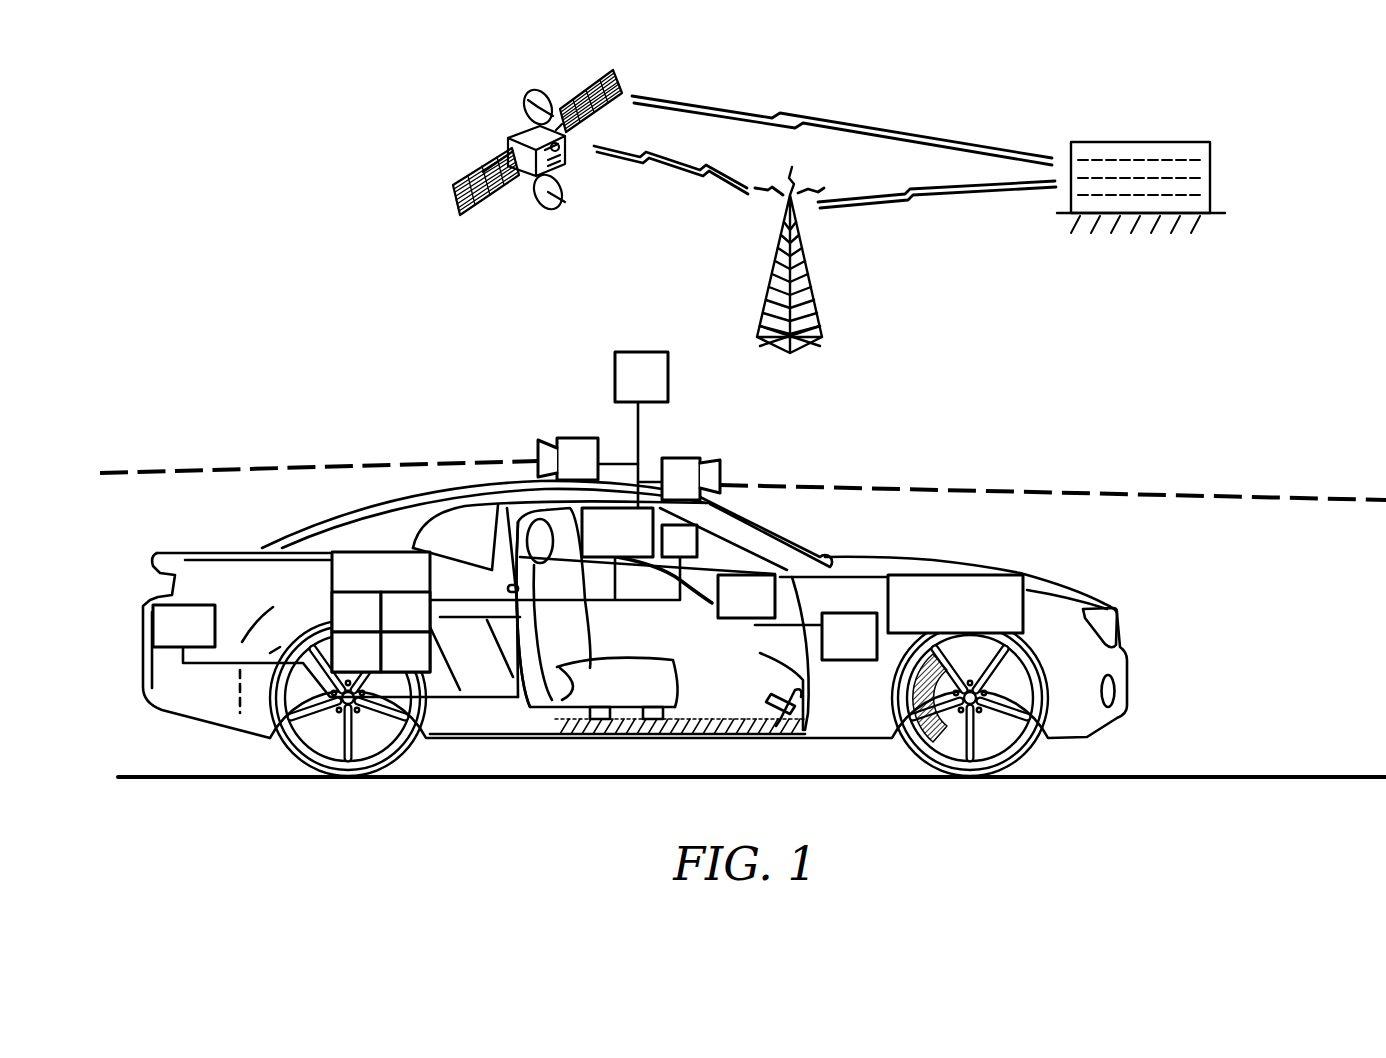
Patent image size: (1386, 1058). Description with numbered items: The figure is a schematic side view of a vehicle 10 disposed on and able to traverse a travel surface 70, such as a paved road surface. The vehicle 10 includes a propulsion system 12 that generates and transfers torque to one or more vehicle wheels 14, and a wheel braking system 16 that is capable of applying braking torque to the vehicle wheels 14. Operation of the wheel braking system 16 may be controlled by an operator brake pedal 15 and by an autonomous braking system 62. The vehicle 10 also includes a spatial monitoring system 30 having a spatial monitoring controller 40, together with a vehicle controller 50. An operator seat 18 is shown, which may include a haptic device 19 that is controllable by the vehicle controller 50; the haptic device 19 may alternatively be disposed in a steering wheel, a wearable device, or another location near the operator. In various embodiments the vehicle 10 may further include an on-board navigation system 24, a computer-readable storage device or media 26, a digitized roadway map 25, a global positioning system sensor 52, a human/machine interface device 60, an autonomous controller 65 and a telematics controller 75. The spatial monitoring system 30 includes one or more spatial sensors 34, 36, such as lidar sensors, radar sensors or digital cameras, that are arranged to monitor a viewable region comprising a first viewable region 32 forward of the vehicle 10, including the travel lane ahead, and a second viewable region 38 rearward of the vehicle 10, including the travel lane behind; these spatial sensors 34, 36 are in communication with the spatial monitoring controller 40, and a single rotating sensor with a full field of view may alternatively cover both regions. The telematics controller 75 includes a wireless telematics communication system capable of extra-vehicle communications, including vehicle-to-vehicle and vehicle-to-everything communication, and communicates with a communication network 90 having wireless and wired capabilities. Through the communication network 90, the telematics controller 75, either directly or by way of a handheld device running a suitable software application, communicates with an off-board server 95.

The vehicle 10 is at (1013, 560).
The propulsion system 12 is at (941, 616).
The vehicle wheels 14 is at (1022, 758).
The operator brake pedal 15 is at (780, 722).
The wheel braking system 16 is at (925, 743).
The operator seat 18 is at (608, 673).
The haptic device 19 is at (672, 757).
The on-board navigation system 24 is at (367, 586).
The digitized roadway map 25 is at (342, 625).
The computer-readable storage device or media 26 is at (342, 664).
The spatial monitoring system 30 is at (700, 459).
The first viewable region 32 is at (848, 488).
The spatial sensor 34 is at (667, 491).
The spatial sensor 36 is at (564, 471).
The second viewable region 38 is at (334, 466).
The spatial monitoring controller 40 is at (603, 544).
The vehicle controller 50 is at (170, 638).
The global positioning system (GPS) sensor 52 is at (627, 389).
The human/machine interface (HMI) device 60 is at (732, 608).
The autonomous braking system 62 is at (836, 649).
The autonomous controller 65 is at (391, 625).
The travel surface 70 is at (1196, 775).
The telematics controller 75 is at (391, 664).
The communication network 90 is at (624, 240).
The off-board server 95 is at (1213, 166).